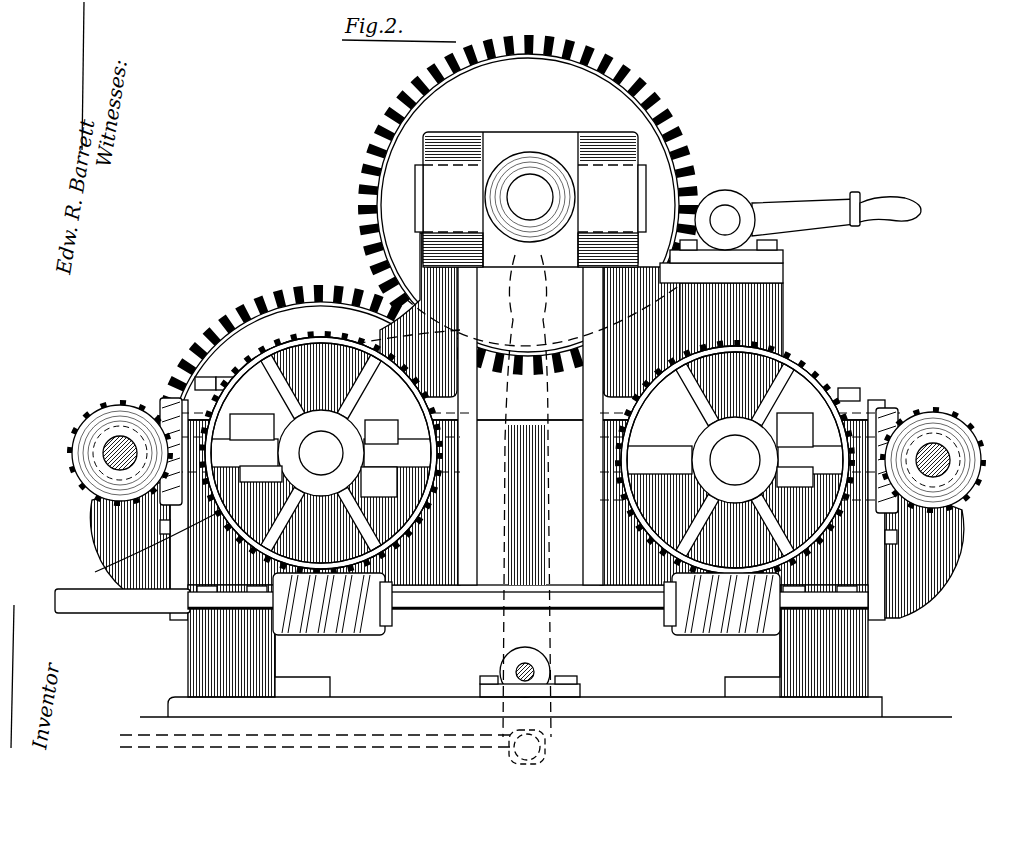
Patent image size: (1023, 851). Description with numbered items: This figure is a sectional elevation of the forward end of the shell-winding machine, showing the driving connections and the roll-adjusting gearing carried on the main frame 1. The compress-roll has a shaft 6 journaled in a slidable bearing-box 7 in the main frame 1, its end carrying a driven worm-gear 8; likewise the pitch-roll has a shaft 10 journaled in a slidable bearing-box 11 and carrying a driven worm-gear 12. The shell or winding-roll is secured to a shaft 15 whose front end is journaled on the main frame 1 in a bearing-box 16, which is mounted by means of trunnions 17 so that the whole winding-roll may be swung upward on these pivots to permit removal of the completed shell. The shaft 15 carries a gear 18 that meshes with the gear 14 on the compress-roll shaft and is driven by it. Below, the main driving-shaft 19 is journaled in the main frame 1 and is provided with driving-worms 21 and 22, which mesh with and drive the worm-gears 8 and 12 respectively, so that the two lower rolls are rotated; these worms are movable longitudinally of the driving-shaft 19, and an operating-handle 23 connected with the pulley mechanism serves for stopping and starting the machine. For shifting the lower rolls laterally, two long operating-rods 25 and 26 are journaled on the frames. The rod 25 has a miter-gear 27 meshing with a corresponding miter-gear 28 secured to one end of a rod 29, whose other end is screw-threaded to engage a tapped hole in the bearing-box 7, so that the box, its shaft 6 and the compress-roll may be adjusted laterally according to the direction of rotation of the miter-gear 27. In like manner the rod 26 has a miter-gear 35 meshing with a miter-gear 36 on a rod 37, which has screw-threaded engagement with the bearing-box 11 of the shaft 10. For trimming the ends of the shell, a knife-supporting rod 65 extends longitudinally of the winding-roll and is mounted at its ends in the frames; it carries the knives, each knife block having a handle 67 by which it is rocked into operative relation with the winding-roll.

The main frame 1 is at (526, 490).
The shaft 6 is at (321, 453).
The slidable bearing-box 7 is at (264, 426).
The driven worm-gear 8 is at (408, 506).
The shaft 10 is at (735, 460).
The slidable bearing-box 11 is at (772, 426).
The driven worm-gear 12 is at (646, 531).
The driving-gear 14 is at (244, 322).
The shaft 15 is at (530, 197).
The bearing-box 16 is at (492, 143).
The trunnions 17 is at (422, 208).
The gear 18 is at (372, 206).
The main driving-shaft 19 is at (95, 610).
The driving-worm 21 is at (343, 636).
The driving-worm 22 is at (706, 638).
The operating-handle 23 is at (549, 519).
The operating-rod 25 is at (112, 462).
The operating-rod 26 is at (944, 470).
The miter-gear 27 is at (82, 455).
The miter-gear 28 is at (165, 406).
The rod 29 is at (525, 460).
The miter-gear 35 is at (933, 444).
The miter-gear 36 is at (887, 412).
The rod 37 is at (139, 547).
The knife-supporting rod 65 is at (728, 218).
The handle 67 is at (796, 210).